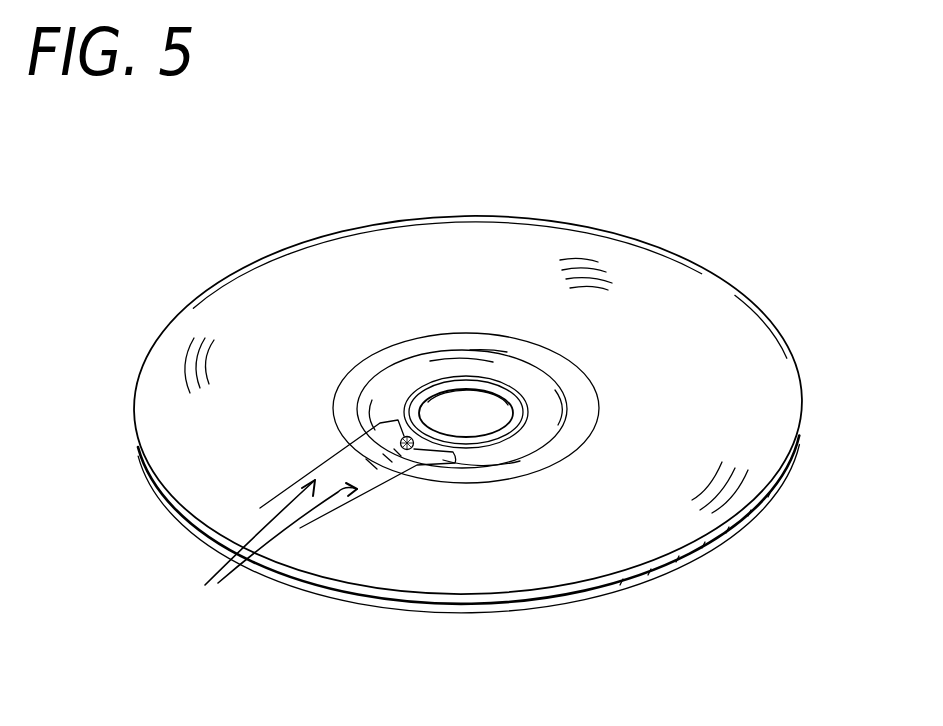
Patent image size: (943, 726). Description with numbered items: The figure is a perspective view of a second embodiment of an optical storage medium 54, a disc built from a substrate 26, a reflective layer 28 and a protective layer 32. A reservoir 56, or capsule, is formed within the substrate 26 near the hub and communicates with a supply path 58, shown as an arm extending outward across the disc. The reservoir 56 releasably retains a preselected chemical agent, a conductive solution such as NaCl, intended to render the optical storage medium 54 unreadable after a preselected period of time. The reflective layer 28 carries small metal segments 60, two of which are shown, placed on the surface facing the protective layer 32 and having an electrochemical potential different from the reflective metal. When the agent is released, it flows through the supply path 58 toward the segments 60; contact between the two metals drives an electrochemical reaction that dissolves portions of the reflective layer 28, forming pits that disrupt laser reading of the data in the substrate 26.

The substrate 26 is at (425, 370).
The reflective layer 28 is at (517, 574).
The protective layer 32 is at (742, 481).
The optical storage medium 54 is at (622, 238).
The reservoir 56 is at (411, 449).
The supply path 58 is at (318, 473).
The metal segments 60 is at (250, 545).